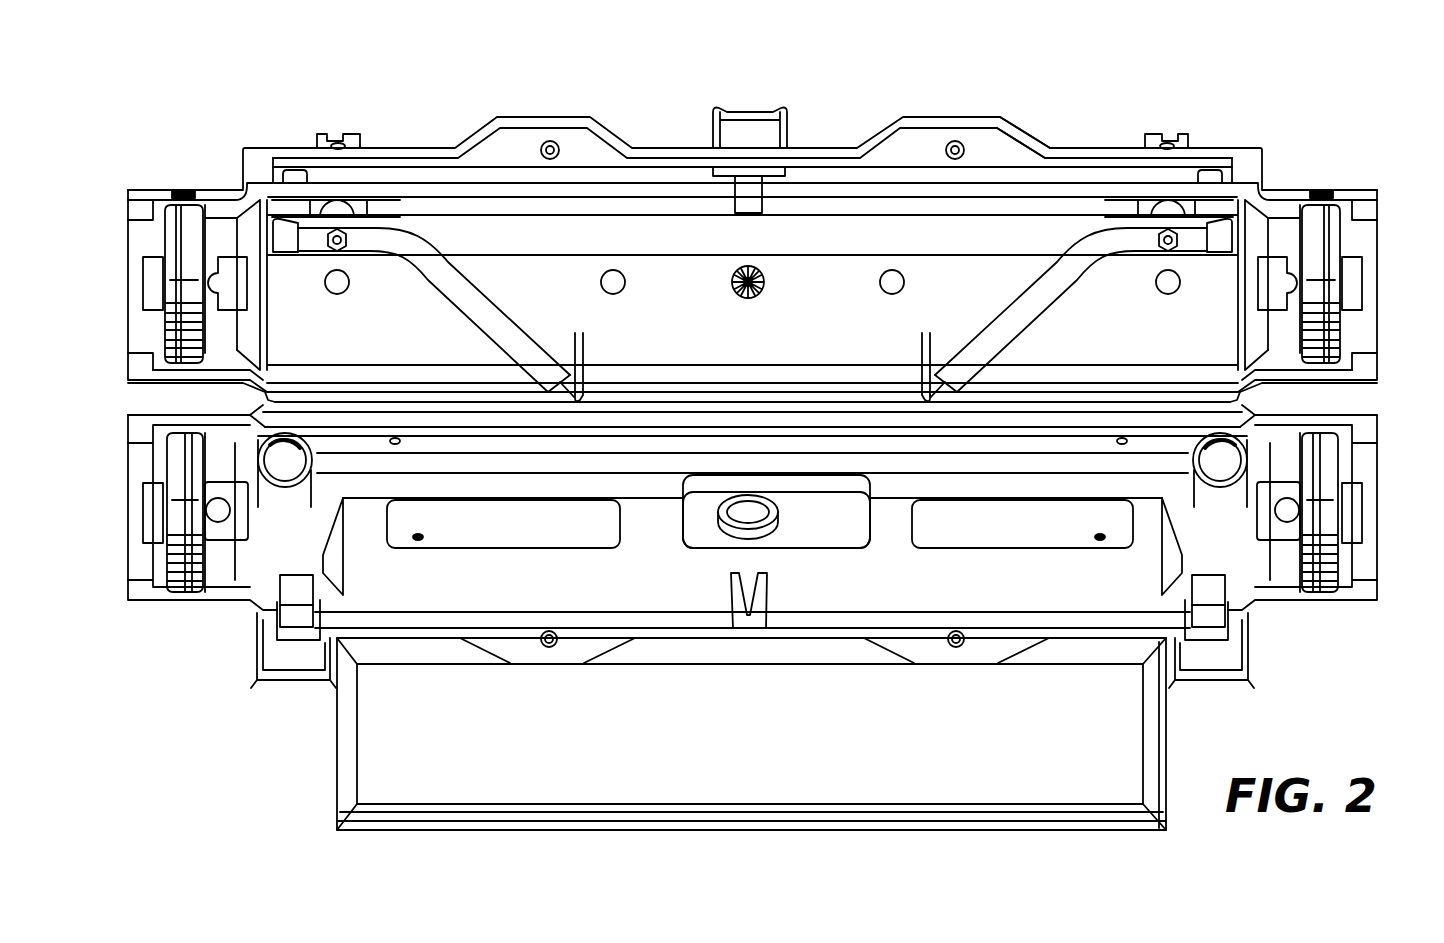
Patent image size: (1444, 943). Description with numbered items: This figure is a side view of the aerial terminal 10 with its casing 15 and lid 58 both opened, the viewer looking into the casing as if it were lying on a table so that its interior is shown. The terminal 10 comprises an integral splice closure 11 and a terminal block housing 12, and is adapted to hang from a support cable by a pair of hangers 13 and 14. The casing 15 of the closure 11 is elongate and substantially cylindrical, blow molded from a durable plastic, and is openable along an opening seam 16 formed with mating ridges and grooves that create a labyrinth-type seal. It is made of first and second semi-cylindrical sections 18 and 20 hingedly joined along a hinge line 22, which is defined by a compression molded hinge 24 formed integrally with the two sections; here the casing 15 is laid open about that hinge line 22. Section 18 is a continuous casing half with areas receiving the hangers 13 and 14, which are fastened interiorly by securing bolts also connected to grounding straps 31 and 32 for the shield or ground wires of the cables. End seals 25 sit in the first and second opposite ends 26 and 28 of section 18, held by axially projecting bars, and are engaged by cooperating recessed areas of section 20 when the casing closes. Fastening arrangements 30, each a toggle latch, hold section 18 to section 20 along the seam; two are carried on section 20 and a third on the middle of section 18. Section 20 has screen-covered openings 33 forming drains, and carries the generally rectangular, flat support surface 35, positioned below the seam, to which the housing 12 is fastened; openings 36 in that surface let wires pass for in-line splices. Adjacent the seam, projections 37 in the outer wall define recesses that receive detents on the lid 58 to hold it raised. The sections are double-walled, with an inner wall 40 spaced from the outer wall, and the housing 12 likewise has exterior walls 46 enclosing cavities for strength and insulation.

The aerial terminal 10 is at (1020, 96).
The splice closure 11 is at (1241, 136).
The terminal block housing 12 is at (1023, 838).
The hanger 13 is at (352, 135).
The hanger 14 is at (1147, 138).
The casing 15 is at (1068, 138).
The opening seam 16 is at (153, 188).
The first casing section 18 is at (650, 148).
The second casing section 20 is at (232, 600).
The hinge line 22 is at (1115, 395).
The compression molded hinge 24 is at (1244, 388).
The end seal 25 is at (160, 244).
The first end 26 is at (135, 196).
The second end 28 is at (1378, 198).
The fastening arrangement 30 is at (790, 117).
The grounding strap 31 is at (520, 316).
The grounding strap 32 is at (1000, 318).
The opening 33 is at (283, 490).
The support surface 35 is at (685, 595).
The opening 36 is at (770, 511).
The projection 37 is at (575, 655).
The inner wall 40 is at (840, 330).
The exterior wall 46 is at (830, 790).
The lid 58 is at (649, 796).